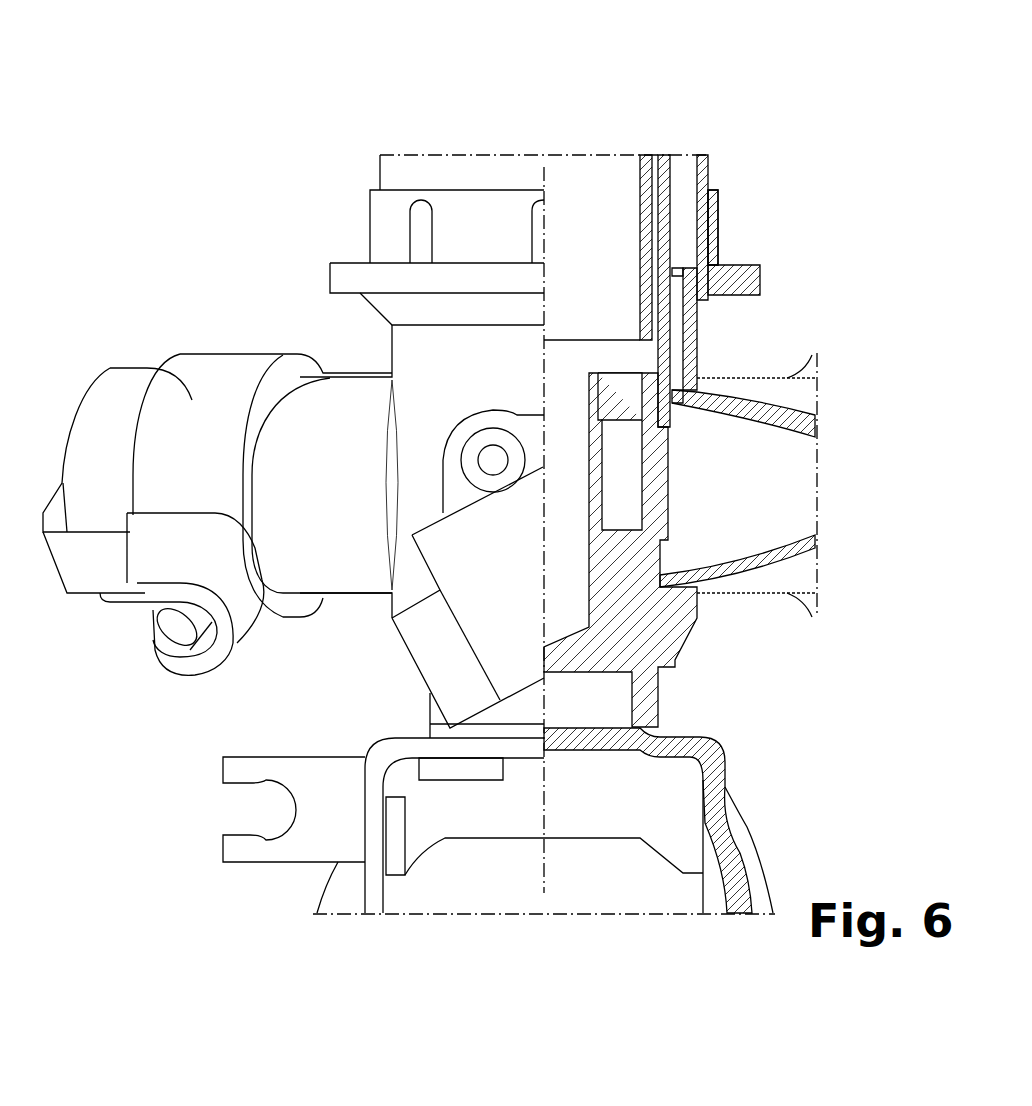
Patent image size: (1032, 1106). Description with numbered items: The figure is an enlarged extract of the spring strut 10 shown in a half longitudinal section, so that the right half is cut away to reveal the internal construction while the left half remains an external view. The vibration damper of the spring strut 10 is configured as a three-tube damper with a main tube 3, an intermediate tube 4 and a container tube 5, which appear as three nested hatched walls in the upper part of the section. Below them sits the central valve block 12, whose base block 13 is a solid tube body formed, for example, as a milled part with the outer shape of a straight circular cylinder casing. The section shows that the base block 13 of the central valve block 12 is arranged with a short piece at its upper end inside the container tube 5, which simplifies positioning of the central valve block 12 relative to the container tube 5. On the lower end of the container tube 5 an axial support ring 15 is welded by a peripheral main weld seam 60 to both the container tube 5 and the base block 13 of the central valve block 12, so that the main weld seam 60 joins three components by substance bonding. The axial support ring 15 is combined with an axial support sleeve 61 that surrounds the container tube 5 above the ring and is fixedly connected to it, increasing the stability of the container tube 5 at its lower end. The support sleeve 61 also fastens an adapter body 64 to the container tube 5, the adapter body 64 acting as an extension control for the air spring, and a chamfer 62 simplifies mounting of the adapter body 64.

The main tube 3 is at (645, 155).
The intermediate tube 4 is at (665, 155).
The container tube 5 is at (703, 155).
The spring strut 10 is at (738, 883).
The central valve block 12 is at (624, 592).
The base block 13 is at (693, 340).
The axial support ring 15 is at (766, 277).
The main weld seam 60 is at (708, 307).
The axial support sleeve 61 is at (722, 237).
The chamfer 62 is at (718, 200).
The adapter body 64 is at (475, 213).